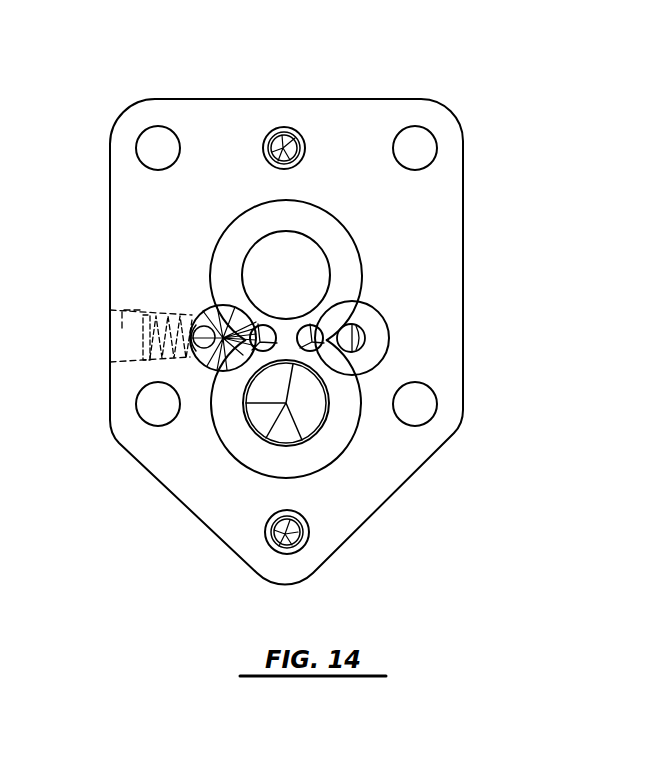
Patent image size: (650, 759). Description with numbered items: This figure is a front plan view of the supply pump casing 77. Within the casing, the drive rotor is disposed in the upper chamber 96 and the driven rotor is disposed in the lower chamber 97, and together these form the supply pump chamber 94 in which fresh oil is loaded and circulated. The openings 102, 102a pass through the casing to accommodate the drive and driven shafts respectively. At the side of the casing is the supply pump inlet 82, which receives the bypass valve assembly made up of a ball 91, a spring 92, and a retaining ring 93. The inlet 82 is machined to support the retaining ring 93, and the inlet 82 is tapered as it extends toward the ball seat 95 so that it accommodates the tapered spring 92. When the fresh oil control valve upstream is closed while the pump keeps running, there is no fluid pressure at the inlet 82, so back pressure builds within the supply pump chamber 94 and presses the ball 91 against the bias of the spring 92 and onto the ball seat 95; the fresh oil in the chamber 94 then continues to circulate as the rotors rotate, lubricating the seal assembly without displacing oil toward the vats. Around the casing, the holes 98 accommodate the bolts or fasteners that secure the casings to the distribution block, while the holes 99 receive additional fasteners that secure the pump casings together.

The supply pump casing 77 is at (264, 96).
The inlet 82 is at (122, 328).
The ball 91 is at (212, 310).
The spring 92 is at (148, 357).
The retaining ring 93 is at (142, 344).
The supply pump chamber 94 is at (299, 207).
The ball seat 95 is at (203, 328).
The upper chamber 96 is at (236, 221).
The lower chamber 97 is at (347, 455).
The holes 98 is at (138, 145).
The holes 99 is at (292, 146).
The opening 102 is at (333, 270).
The opening 102a is at (312, 410).